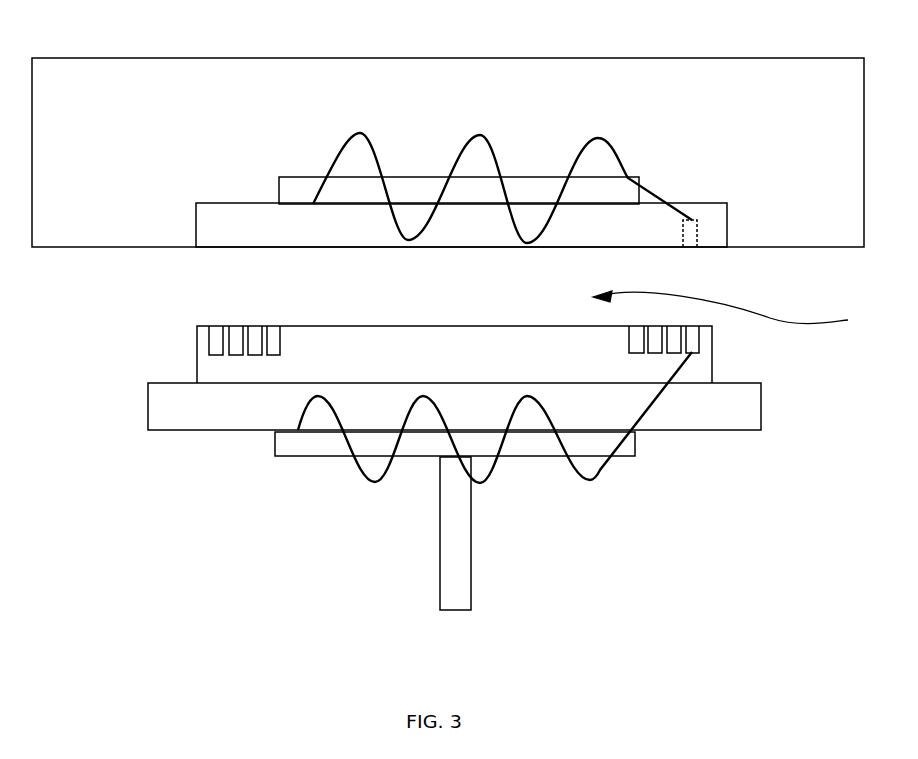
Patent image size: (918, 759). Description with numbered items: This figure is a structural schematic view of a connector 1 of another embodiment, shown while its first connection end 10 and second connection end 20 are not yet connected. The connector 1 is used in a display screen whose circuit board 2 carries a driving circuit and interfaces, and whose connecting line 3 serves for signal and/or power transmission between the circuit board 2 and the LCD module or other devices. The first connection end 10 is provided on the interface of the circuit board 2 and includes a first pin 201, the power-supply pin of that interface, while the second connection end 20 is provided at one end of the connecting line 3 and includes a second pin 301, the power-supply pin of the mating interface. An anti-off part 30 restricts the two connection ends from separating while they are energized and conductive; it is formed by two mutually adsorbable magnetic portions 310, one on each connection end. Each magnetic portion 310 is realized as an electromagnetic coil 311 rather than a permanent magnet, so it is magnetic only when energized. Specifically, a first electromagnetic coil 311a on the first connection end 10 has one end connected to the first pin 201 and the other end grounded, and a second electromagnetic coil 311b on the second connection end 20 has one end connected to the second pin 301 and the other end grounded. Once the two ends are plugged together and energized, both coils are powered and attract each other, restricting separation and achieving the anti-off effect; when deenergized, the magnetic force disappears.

The connector 1 is at (731, 310).
The circuit board 2 is at (747, 68).
The connecting line 3 is at (457, 563).
The first connection end 10 is at (282, 228).
The second connection end 20 is at (212, 378).
The anti-off part 30 is at (370, 269).
The first pin 201 is at (697, 238).
The second pin 301 is at (697, 336).
The magnetic portion 310 is at (370, 269).
The electromagnetic coil 311 is at (370, 269).
The first electromagnetic coil 311a is at (474, 135).
The second electromagnetic coil 311b is at (362, 470).